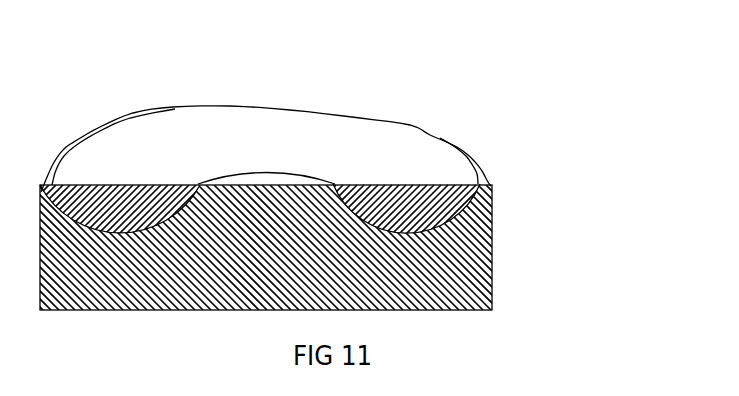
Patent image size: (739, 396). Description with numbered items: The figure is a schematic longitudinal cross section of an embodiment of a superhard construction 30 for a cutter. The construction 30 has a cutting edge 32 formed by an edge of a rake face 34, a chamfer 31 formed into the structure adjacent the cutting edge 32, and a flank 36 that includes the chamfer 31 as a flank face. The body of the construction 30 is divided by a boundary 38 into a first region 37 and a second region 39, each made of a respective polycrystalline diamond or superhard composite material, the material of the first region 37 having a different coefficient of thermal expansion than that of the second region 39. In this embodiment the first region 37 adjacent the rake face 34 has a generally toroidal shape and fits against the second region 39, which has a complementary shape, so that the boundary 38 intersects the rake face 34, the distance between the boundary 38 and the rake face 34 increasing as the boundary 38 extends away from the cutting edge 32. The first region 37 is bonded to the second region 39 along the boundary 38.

The superhard construction 30 is at (322, 103).
The chamfer 31 is at (493, 187).
The cutting edge 32 is at (489, 184).
The rake face 34 is at (361, 136).
The flank 36 is at (309, 183).
The first region 37 is at (402, 186).
The boundary 38 is at (453, 217).
The second region 39 is at (457, 243).